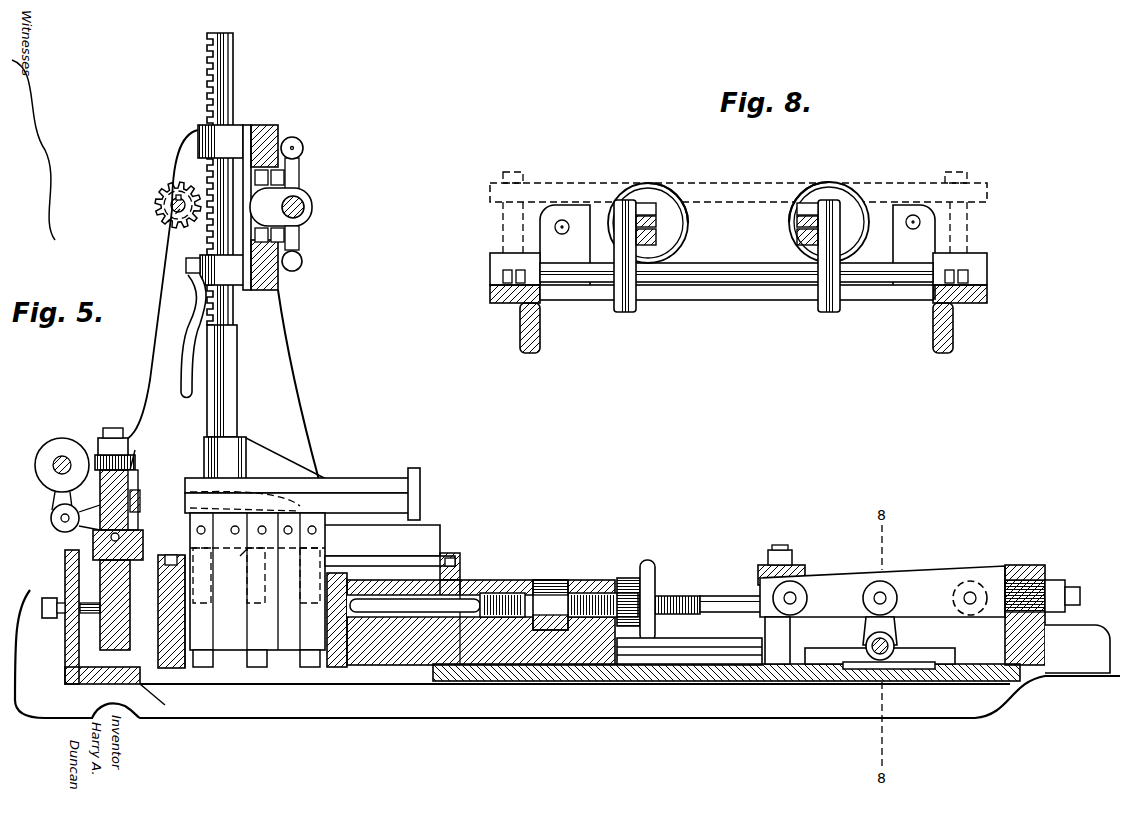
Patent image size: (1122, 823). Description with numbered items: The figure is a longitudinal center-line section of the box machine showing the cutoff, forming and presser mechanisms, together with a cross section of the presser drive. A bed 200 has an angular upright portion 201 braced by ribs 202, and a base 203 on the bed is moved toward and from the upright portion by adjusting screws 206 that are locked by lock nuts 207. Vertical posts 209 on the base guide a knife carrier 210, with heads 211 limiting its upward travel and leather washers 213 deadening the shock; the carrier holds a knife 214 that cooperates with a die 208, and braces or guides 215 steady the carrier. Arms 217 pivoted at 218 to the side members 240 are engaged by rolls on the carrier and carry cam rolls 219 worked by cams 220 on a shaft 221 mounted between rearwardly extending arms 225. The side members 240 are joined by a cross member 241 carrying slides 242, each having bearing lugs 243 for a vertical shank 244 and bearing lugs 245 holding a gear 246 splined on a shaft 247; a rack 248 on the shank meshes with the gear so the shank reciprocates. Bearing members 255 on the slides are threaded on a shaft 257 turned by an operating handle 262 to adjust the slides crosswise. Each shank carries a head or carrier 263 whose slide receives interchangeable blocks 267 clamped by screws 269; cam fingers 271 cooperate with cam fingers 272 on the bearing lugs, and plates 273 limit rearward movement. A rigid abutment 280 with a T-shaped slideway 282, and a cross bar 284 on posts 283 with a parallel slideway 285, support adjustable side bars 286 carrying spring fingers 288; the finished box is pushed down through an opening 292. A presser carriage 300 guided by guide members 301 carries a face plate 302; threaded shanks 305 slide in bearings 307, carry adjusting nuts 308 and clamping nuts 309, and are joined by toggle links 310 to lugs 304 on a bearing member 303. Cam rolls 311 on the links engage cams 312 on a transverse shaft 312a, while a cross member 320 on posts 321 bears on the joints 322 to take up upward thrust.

In FIG. 5, the bed 200 is at (556, 682).
In FIG. 8, the bed 200 is at (490, 294).
In FIG. 5, the angular upright portion 201 is at (65, 672).
In FIG. 5, the ribs 202 is at (405, 720).
In FIG. 8, the ribs 202 is at (530, 355).
In FIG. 5, the base 203 is at (159, 697).
In FIG. 5, the adjusting screws 206 is at (45, 600).
In FIG. 5, the lock nuts 207 is at (63, 615).
In FIG. 5, the die 208 is at (93, 548).
In FIG. 5, the vertical posts 209 is at (83, 440).
In FIG. 5, the knife carrier 210 is at (132, 470).
In FIG. 5, the heads 211 is at (128, 452).
In FIG. 5, the leather washers 213 is at (140, 468).
In FIG. 5, the knife 214 is at (262, 566).
In FIG. 5, the braces or guides 215 is at (92, 568).
In FIG. 5, the arms 217 is at (138, 500).
In FIG. 5, the pivot 218 is at (262, 490).
In FIG. 5, the cam rolls 219 is at (56, 510).
In FIG. 5, the cams 220 is at (40, 468).
In FIG. 5, the shaft 221 is at (60, 456).
In FIG. 5, the rearwardly extending arms 225 is at (101, 440).
In FIG. 5, the side members 240 is at (288, 386).
In FIG. 5, the cross member 241 is at (280, 140).
In FIG. 5, the slides 242 is at (249, 128).
In FIG. 5, the bearing lugs 243 is at (210, 135).
In FIG. 5, the vertical shaft or shank 244 is at (236, 360).
In FIG. 5, the bearing lugs 245 is at (168, 222).
In FIG. 5, the gear 246 is at (156, 205).
In FIG. 5, the shaft 247 is at (176, 200).
In FIG. 5, the rack 248 is at (207, 60).
In FIG. 5, the bearing member 255 is at (281, 220).
In FIG. 5, the shaft 257 is at (306, 206).
In FIG. 5, the operating handle 262 is at (304, 150).
In FIG. 5, the head or carrier 263 is at (357, 480).
In FIG. 5, the blocks 267 is at (326, 528).
In FIG. 5, the screws 269 is at (292, 524).
In FIG. 5, the cam fingers 271 is at (196, 470).
In FIG. 5, the cam fingers 272 is at (180, 342).
In FIG. 5, the plates 273 is at (421, 478).
In FIG. 5, the rigid abutment 280 is at (188, 655).
In FIG. 5, the T-shaped groove or slideway 282 is at (180, 560).
In FIG. 5, the posts 283 is at (462, 580).
In FIG. 5, the cross bar 284 is at (462, 575).
In FIG. 5, the T-shaped groove or slideway 285 is at (452, 553).
In FIG. 5, the side bars 286 is at (438, 556).
In FIG. 5, the spring fingers 288 is at (300, 640).
In FIG. 5, the opening 292 is at (228, 678).
In FIG. 5, the carriage 300 is at (490, 668).
In FIG. 5, the guide members 301 is at (677, 655).
In FIG. 5, the face plate 302 is at (339, 670).
In FIG. 5, the bearing member 303 is at (1048, 652).
In FIG. 5, the lugs 304 is at (1000, 580).
In FIG. 5, the threaded shanks 305 is at (722, 596).
In FIG. 5, the bearings 307 is at (505, 582).
In FIG. 5, the adjusting nuts 308 is at (550, 580).
In FIG. 5, the clamping nuts 309 is at (648, 572).
In FIG. 8, the clamping nuts 309 is at (680, 220).
In FIG. 5, the toggle links 310 is at (842, 592).
In FIG. 8, the toggle links 310 is at (656, 228).
In FIG. 5, the cam rolls 311 is at (892, 594).
In FIG. 8, the cam rolls 311 is at (625, 215).
In FIG. 5, the cams 312 is at (895, 622).
In FIG. 8, the cams 312 is at (627, 312).
In FIG. 5, the shaft 312a is at (882, 670).
In FIG. 8, the shaft 312a is at (760, 292).
In FIG. 5, the cross member 320 is at (790, 572).
In FIG. 8, the cross member 320 is at (990, 192).
In FIG. 5, the posts 321 is at (766, 630).
In FIG. 8, the posts 321 is at (508, 228).
In FIG. 5, the joints 322 is at (800, 607).